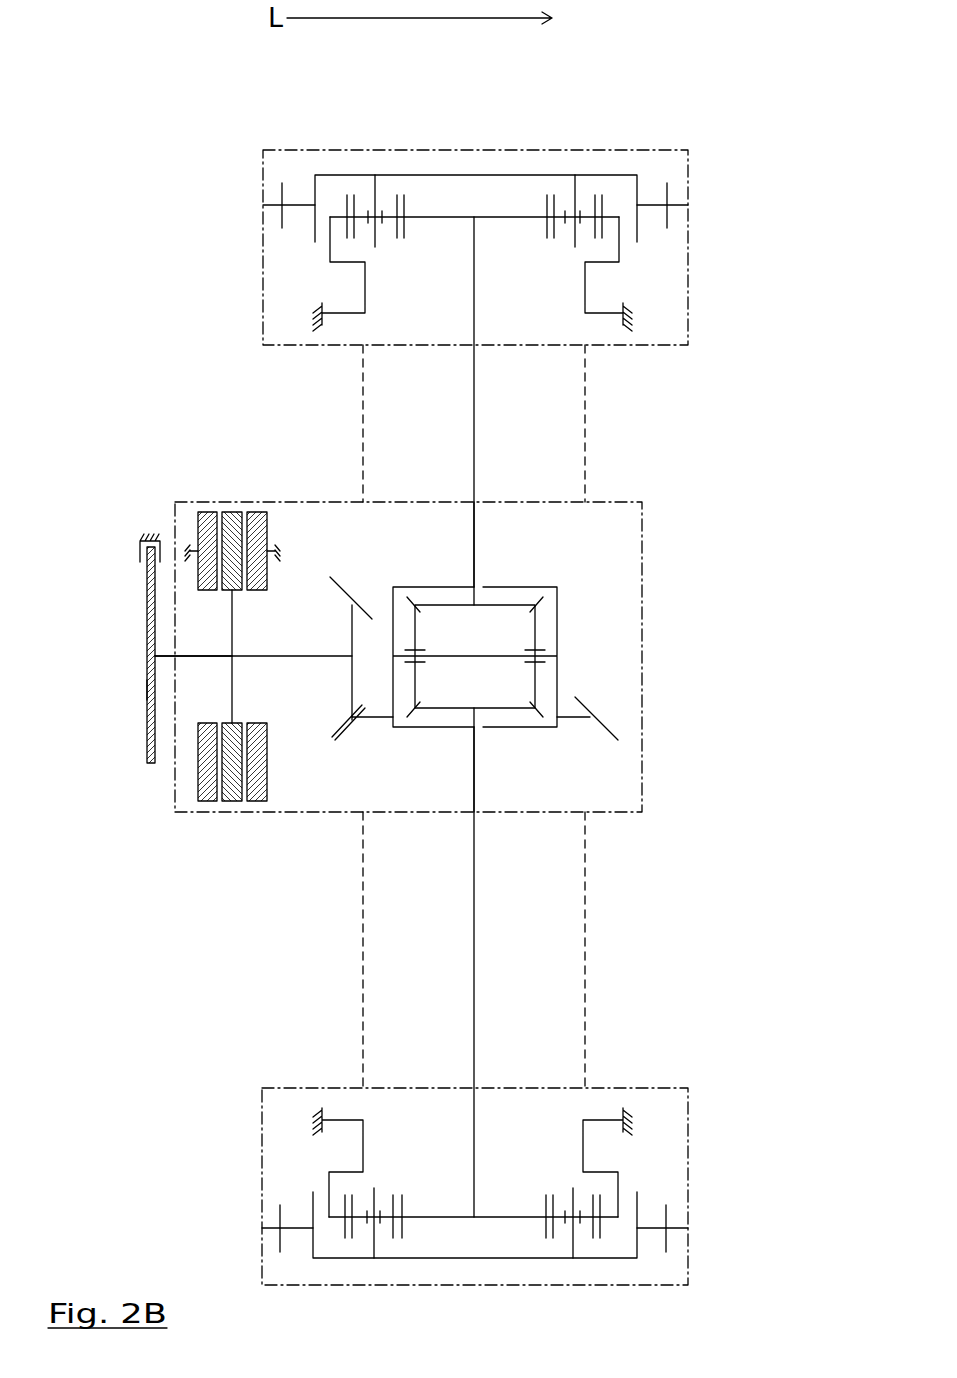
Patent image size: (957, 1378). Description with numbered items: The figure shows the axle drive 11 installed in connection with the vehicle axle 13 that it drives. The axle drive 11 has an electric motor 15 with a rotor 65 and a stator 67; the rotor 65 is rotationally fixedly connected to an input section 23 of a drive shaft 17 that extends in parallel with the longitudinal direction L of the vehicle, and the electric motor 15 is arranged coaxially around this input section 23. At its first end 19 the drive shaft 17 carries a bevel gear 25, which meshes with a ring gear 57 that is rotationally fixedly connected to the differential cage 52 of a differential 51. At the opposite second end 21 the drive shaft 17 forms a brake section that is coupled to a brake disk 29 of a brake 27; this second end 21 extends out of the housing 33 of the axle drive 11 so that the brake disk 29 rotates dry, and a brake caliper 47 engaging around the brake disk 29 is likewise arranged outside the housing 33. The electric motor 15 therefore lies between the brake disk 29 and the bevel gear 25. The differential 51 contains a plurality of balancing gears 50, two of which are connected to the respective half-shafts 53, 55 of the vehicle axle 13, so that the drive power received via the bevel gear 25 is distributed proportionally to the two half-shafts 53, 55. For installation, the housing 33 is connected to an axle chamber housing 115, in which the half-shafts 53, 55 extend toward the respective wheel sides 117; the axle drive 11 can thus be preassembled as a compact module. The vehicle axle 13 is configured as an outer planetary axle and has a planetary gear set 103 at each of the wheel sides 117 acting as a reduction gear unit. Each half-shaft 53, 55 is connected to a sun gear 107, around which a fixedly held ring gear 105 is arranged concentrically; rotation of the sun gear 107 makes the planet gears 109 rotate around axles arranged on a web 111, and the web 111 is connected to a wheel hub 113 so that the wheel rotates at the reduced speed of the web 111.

The axle drive 11 is at (111, 481).
The vehicle axle 13 is at (516, 413).
The electric motor 15 is at (256, 603).
The drive shaft 17 is at (292, 656).
The first end 19 is at (352, 657).
The second end 21 is at (155, 656).
The input section 23 is at (230, 657).
The bevel gear 25 is at (342, 590).
The brake 27 is at (113, 650).
The brake disk 29 is at (150, 692).
The housing 33 is at (643, 595).
The brake caliper 47 is at (140, 552).
The balancing gears 50 is at (417, 633).
The differential 51 is at (564, 685).
The differential cage 52 is at (405, 727).
The half-shaft 53 is at (474, 548).
The half-shaft 55 is at (474, 778).
The ring gear 57 is at (352, 733).
The rotor 65 is at (235, 527).
The stator 67 is at (210, 523).
The planetary gear set 103 is at (413, 311).
The ring gear 105 is at (607, 207).
The sun gear 107 is at (403, 210).
The planet gears 109 is at (387, 210).
The web 111 is at (367, 175).
The wheel hubs 113 is at (272, 206).
The axle chamber housing 115 is at (594, 454).
The wheel sides 117 is at (689, 203).